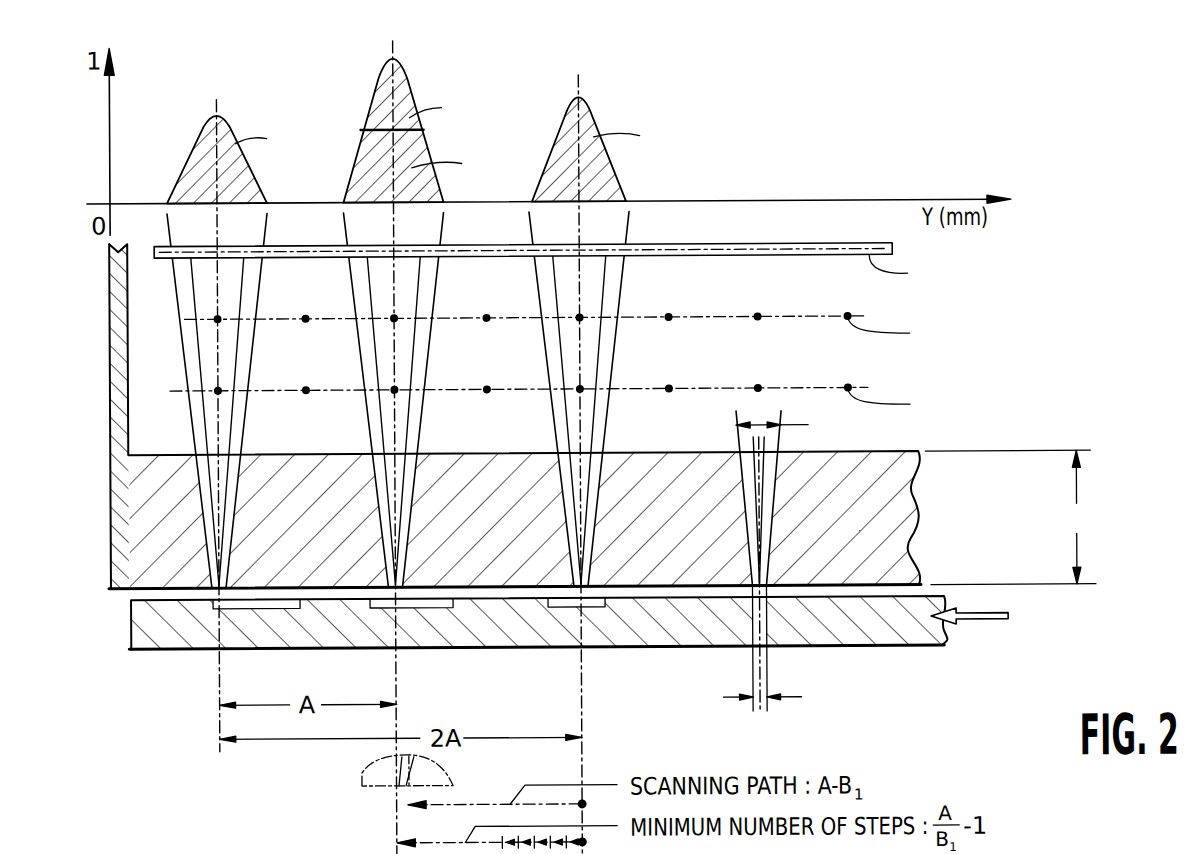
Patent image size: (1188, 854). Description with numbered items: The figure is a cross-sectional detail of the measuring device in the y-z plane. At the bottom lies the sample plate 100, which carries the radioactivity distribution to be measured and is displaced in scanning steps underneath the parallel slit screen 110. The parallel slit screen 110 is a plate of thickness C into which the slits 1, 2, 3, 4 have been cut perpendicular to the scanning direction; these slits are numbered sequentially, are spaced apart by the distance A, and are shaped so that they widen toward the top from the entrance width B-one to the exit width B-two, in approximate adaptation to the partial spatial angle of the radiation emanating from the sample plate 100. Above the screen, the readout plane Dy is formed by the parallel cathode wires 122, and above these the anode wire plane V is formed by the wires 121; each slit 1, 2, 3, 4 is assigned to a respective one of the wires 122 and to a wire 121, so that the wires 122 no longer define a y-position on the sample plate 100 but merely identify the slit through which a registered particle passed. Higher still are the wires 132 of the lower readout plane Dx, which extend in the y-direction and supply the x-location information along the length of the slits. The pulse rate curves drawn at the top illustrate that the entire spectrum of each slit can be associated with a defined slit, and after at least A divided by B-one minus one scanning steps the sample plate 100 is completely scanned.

The slit 1 is at (217, 537).
The slit 2 is at (391, 530).
The slit 3 is at (576, 522).
The slit 4 is at (753, 527).
The sample plate 100 is at (888, 618).
The parallel slit screen 110 is at (903, 517).
The wires of the anode wire grid 121 is at (757, 316).
The cathode wires 122 is at (757, 387).
The wires of the lower readout plane 132 is at (723, 243).